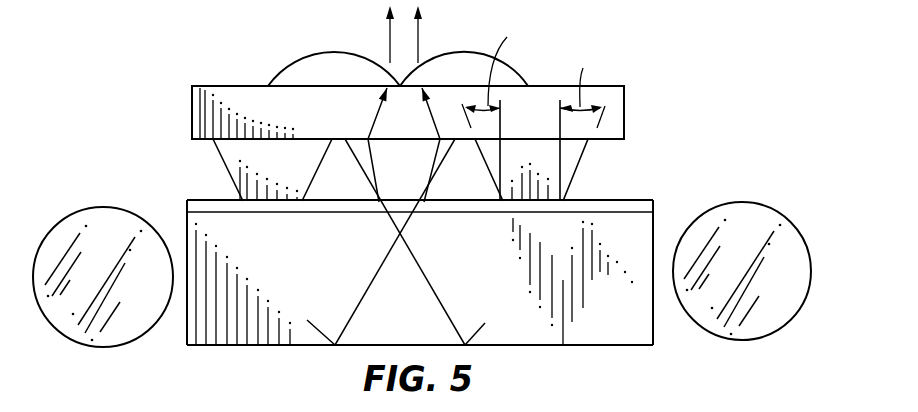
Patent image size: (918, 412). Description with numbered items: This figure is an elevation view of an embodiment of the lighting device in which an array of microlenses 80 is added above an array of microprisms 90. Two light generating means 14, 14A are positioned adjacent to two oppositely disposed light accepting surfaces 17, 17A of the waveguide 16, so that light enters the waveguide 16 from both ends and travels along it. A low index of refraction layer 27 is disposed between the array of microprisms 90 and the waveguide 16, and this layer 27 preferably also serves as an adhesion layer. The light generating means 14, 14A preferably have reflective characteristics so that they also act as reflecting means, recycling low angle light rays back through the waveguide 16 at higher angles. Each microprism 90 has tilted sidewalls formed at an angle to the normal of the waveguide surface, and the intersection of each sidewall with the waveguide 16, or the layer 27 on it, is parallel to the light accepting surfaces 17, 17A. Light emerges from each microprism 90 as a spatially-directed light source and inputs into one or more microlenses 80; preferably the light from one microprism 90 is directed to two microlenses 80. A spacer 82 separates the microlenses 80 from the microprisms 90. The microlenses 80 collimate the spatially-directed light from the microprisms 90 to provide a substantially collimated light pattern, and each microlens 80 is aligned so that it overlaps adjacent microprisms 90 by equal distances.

The light generating means 14 is at (99, 207).
The light generating means 14A is at (738, 203).
The waveguide 16 is at (633, 345).
The light accepting surface 17 is at (187, 330).
The light accepting surface 17A is at (654, 323).
The low index of refraction layer 27 is at (633, 199).
The microlenses 80 is at (298, 60).
The spacer 82 is at (192, 107).
The microprisms 90 is at (222, 160).